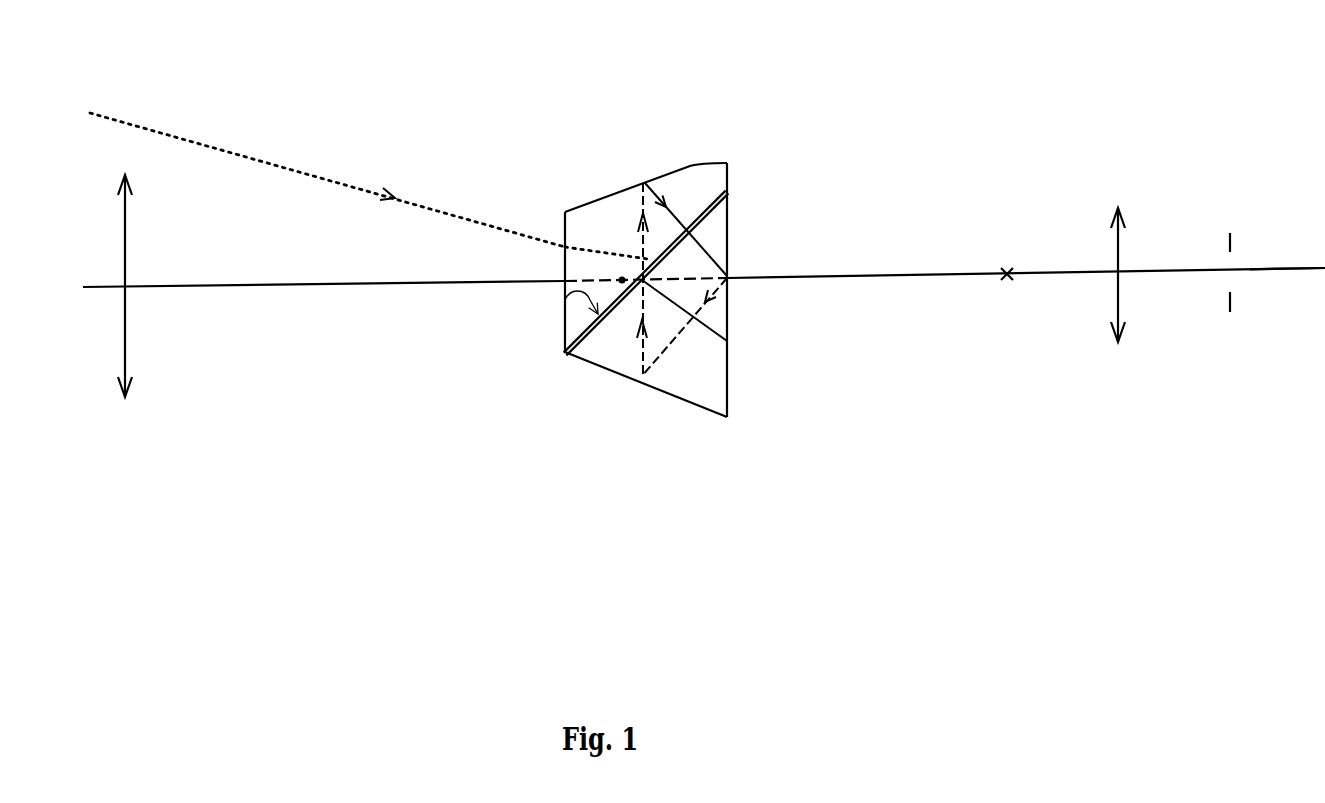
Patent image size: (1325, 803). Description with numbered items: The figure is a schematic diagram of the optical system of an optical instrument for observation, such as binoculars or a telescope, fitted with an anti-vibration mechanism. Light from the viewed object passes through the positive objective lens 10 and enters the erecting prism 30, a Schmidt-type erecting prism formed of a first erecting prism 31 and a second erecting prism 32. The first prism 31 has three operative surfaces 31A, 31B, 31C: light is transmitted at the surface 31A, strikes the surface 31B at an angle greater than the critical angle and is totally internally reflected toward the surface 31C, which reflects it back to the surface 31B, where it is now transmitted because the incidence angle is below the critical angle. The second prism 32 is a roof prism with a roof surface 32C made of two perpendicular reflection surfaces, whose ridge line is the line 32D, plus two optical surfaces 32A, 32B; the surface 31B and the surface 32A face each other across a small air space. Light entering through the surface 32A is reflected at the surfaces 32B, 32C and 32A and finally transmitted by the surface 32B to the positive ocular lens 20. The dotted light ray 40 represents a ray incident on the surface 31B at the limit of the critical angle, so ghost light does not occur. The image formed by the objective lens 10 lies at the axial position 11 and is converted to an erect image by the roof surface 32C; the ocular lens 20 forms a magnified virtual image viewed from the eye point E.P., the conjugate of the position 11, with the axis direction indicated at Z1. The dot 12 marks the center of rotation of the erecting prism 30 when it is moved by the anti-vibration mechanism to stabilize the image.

The positive objective lens 10 is at (123, 218).
The axial position of the image formed by the objective lens 11 is at (1007, 273).
The center of rotation of the erecting prism 12 is at (620, 280).
The positive ocular lens 20 is at (1117, 248).
The erecting prism 30 is at (645, 250).
The first erecting prism 31 is at (645, 207).
The surface of the first prism 31A is at (563, 226).
The surface of the first prism 31B is at (724, 190).
The surface of the first prism 31C is at (600, 202).
The second erecting prism 32 is at (663, 336).
The optical surface of the second prism 32A is at (718, 200).
The optical surface of the second prism 32B is at (728, 255).
The roof surface 32C is at (717, 378).
The ridge line of the roof surface 32D is at (698, 405).
The light ray 40 is at (333, 182).
The eye point E.P. is at (1231, 248).
The optical axis direction Z1 is at (1297, 275).